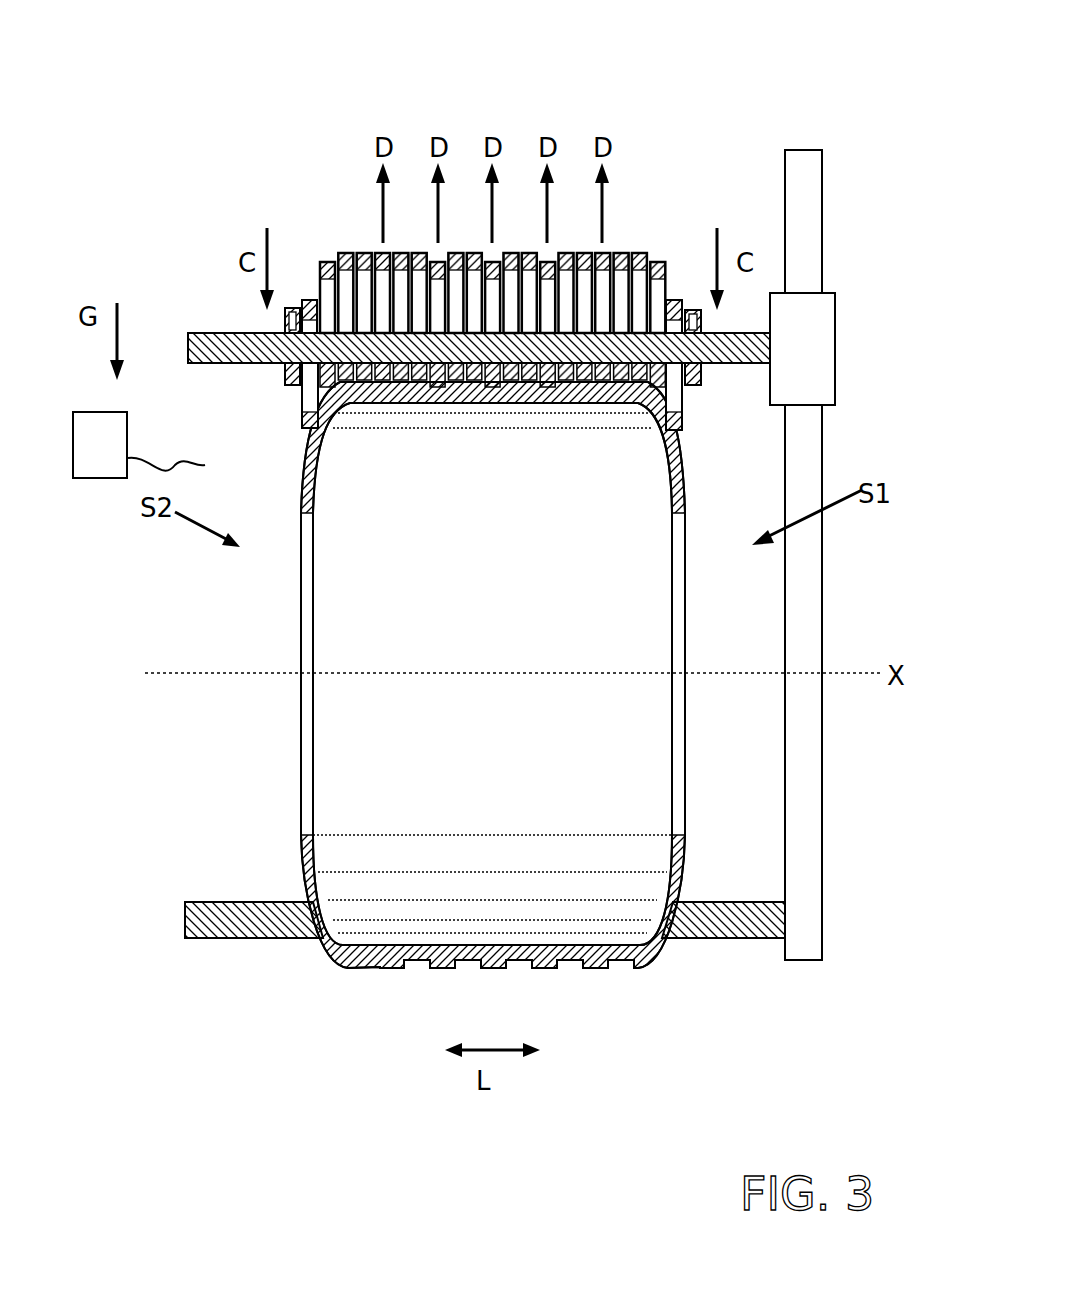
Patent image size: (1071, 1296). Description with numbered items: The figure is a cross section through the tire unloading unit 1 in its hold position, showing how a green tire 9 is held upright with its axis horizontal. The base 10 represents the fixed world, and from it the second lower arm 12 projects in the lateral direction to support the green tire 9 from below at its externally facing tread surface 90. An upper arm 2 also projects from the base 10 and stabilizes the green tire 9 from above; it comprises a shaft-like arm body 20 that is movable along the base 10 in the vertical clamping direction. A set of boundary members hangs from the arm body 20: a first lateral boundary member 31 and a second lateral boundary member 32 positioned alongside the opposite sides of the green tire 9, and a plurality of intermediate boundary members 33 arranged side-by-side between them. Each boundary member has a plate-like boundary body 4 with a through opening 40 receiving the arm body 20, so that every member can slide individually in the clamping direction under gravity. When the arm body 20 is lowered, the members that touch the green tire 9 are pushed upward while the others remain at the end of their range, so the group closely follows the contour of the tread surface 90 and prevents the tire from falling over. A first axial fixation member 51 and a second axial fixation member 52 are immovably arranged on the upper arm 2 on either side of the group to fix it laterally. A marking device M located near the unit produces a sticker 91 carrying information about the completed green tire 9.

The tire unloading unit 1 is at (185, 96).
The upper arm 2 is at (665, 128).
The boundary body 4 is at (310, 300).
The green tire 9 is at (320, 620).
The base 10 is at (805, 232).
The second lower arm 12 is at (710, 935).
The arm body 20 is at (194, 350).
The first lateral boundary member 31 is at (676, 388).
The second lateral boundary member 32 is at (305, 395).
The intermediate boundary members 33 is at (362, 256).
The through opening 40 is at (285, 320).
The first axial fixation member 51 is at (701, 375).
The second axial fixation member 52 is at (285, 372).
The tread surface 90 is at (373, 972).
The sticker 91 is at (186, 463).
The marking device M is at (90, 470).